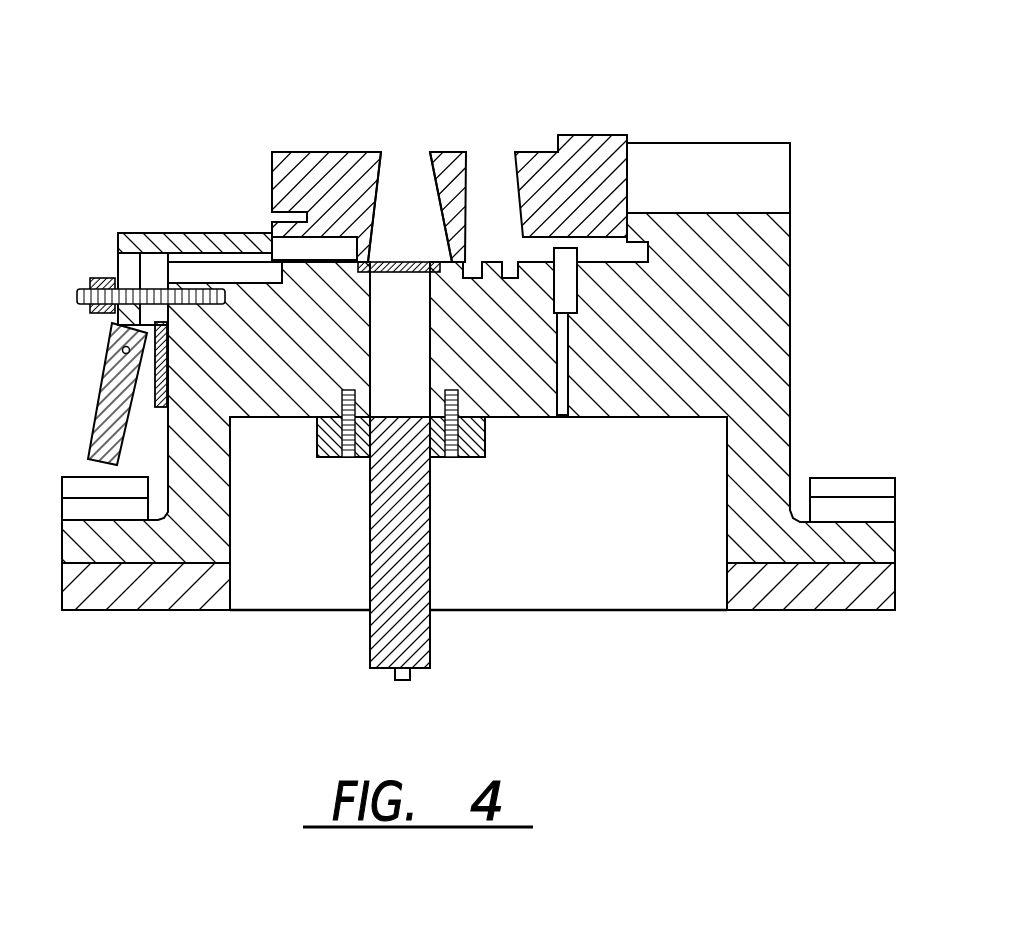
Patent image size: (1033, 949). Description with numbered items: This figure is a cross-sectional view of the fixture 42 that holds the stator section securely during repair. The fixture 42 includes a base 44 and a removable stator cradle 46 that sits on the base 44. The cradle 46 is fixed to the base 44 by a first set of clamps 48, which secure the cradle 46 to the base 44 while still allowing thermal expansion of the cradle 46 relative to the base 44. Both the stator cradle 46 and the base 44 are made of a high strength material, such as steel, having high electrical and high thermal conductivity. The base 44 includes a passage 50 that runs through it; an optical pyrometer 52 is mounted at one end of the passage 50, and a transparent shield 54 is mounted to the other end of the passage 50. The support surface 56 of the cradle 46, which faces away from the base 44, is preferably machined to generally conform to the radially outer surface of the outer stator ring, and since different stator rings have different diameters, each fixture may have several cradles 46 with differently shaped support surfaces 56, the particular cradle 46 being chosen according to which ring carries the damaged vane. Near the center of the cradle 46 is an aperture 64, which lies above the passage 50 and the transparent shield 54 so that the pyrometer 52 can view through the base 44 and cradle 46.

The fixture 42 is at (456, 340).
The base 44 is at (763, 330).
The stator cradle 46 is at (616, 136).
The first set of clamps 48 is at (117, 248).
The passage 50 is at (420, 360).
The optical pyrometer 52 is at (432, 522).
The transparent shield 54 is at (407, 176).
The support surface 56 is at (346, 147).
The aperture 64 is at (423, 152).